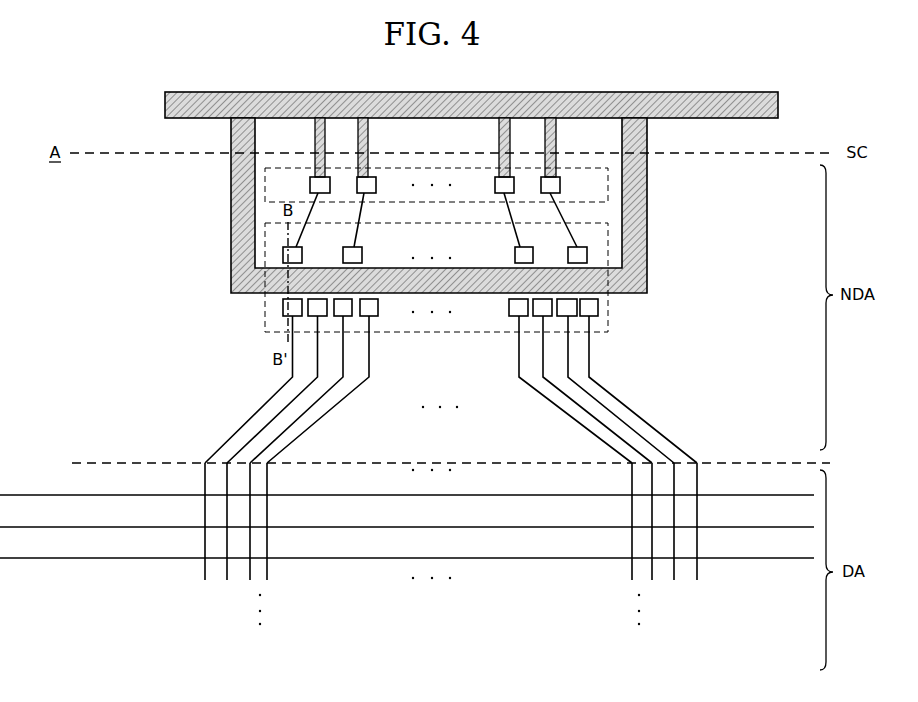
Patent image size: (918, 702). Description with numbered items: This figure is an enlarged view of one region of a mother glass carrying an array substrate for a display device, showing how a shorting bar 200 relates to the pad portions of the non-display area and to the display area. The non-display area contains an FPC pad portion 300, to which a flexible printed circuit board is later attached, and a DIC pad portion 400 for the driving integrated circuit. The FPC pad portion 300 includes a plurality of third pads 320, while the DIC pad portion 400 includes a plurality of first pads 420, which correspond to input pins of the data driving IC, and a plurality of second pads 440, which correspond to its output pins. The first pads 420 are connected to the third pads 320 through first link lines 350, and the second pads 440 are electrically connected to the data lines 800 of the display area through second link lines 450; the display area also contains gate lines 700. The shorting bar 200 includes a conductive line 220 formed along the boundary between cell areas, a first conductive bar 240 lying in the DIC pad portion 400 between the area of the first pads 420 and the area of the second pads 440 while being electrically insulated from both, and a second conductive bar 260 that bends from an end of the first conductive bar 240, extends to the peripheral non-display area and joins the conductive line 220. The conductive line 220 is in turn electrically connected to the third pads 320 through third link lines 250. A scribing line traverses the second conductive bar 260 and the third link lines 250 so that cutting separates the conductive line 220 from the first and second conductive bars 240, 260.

The shorting bar 200 is at (668, 78).
The conductive line 220 is at (778, 105).
The first conductive bar 240 is at (400, 273).
The third link lines 250 is at (315, 128).
The second conductive bar 260 is at (248, 250).
The FPC pad portion 300 is at (265, 185).
The third pads 320 is at (560, 186).
The first link lines 350 is at (312, 197).
The DIC pad portion 400 is at (265, 310).
The first pads 420 is at (587, 253).
The second pads 440 is at (598, 306).
The second link lines 450 is at (592, 354).
The gate lines 700 is at (98, 494).
The data lines 800 is at (268, 565).